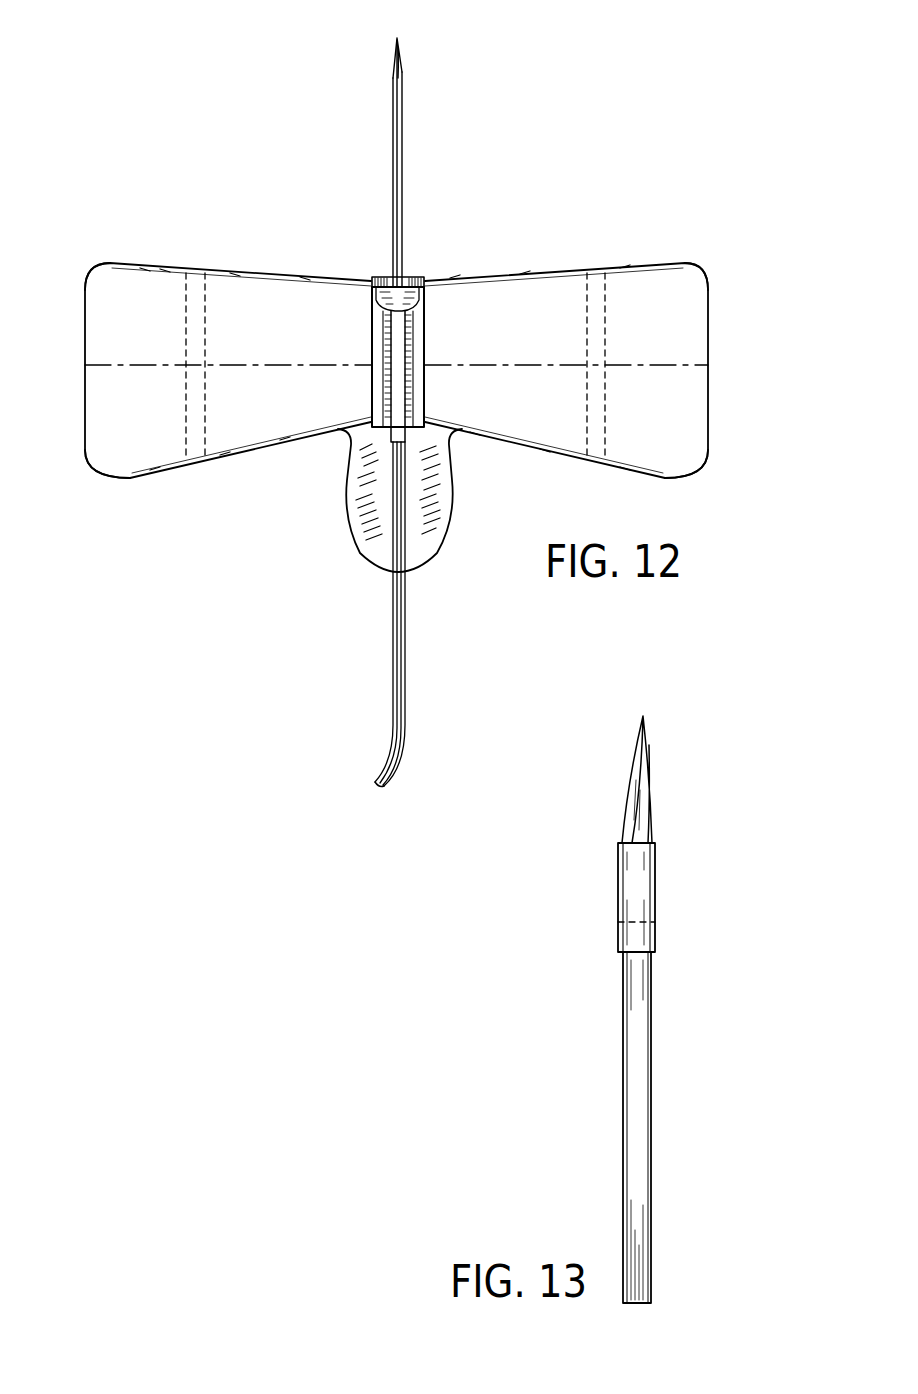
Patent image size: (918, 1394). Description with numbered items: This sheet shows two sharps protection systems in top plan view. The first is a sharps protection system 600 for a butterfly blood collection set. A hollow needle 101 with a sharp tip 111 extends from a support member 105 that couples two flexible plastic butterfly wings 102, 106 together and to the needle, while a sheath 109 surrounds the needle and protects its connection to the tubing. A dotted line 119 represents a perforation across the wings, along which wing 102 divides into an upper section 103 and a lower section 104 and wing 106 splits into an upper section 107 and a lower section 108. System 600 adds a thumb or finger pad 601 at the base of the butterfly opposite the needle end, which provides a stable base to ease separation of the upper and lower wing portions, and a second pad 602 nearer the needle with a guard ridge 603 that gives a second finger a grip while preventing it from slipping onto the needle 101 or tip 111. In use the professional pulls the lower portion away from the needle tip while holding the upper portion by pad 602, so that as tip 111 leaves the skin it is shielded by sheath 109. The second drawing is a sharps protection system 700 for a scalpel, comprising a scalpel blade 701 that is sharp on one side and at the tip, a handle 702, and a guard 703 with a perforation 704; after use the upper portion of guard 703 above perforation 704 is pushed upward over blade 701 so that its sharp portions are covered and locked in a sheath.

In FIG. 12, the hollow needle 101 is at (461, 143).
In FIG. 12, the sharp tip 111 is at (397, 42).
In FIG. 12, the butterfly wing 102 is at (633, 367).
In FIG. 12, the upper section 103 is at (678, 282).
In FIG. 12, the lower section 104 is at (680, 455).
In FIG. 12, the support member 105 is at (390, 322).
In FIG. 12, the butterfly wing 106 is at (193, 368).
In FIG. 12, the upper section 107 is at (123, 292).
In FIG. 12, the lower section 108 is at (113, 450).
In FIG. 12, the sheath 109 is at (398, 347).
In FIG. 12, the dotted line 119 is at (522, 358).
In FIG. 12, the sharps protection system 600 is at (204, 521).
In FIG. 12, the finger pad 601 is at (418, 560).
In FIG. 12, the second pad 602 is at (380, 310).
In FIG. 12, the guard ridge 603 is at (407, 280).
In FIG. 13, the sharps protection system 700 is at (623, 1009).
In FIG. 13, the scalpel blade 701 is at (633, 800).
In FIG. 13, the handle 702 is at (633, 1145).
In FIG. 13, the guard 703 is at (628, 866).
In FIG. 13, the perforation 704 is at (620, 935).